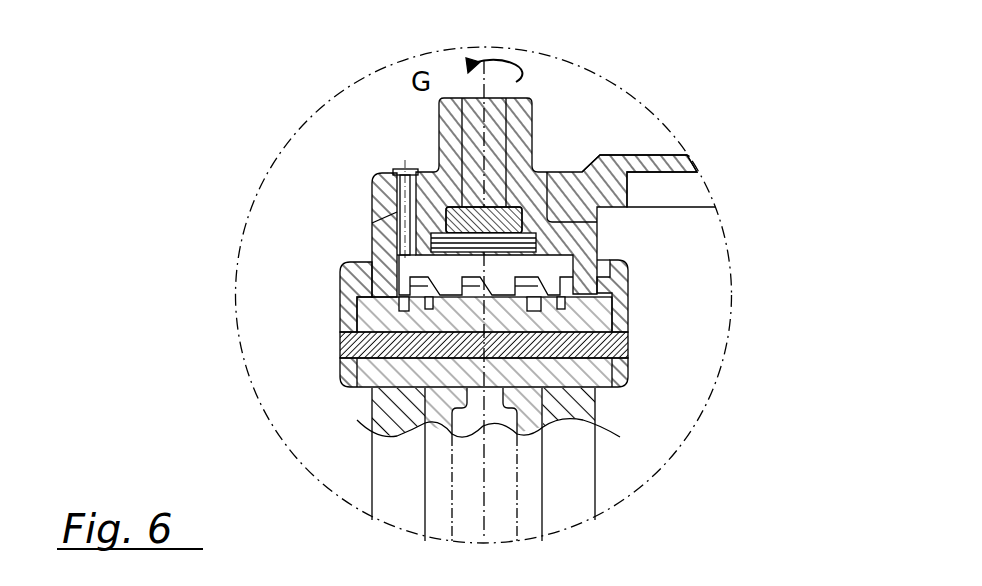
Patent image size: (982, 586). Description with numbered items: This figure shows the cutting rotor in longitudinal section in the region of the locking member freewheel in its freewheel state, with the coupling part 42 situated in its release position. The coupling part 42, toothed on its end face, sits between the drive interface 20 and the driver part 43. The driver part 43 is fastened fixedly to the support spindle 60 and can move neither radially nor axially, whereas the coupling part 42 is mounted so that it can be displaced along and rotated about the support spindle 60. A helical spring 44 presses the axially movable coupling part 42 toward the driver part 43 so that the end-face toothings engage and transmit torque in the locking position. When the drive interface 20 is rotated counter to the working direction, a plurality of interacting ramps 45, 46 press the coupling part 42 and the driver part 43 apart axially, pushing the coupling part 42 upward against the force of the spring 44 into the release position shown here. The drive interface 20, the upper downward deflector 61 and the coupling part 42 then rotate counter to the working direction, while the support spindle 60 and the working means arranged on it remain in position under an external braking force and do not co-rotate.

The drive interface 20 is at (567, 133).
The coupling part 42 is at (557, 267).
The driver part 43 is at (590, 318).
The helical spring 44 is at (452, 226).
The ramp 45 is at (460, 312).
The ramp 46 is at (463, 283).
The support spindle 60 is at (530, 505).
The upper downward deflector 61 is at (693, 155).